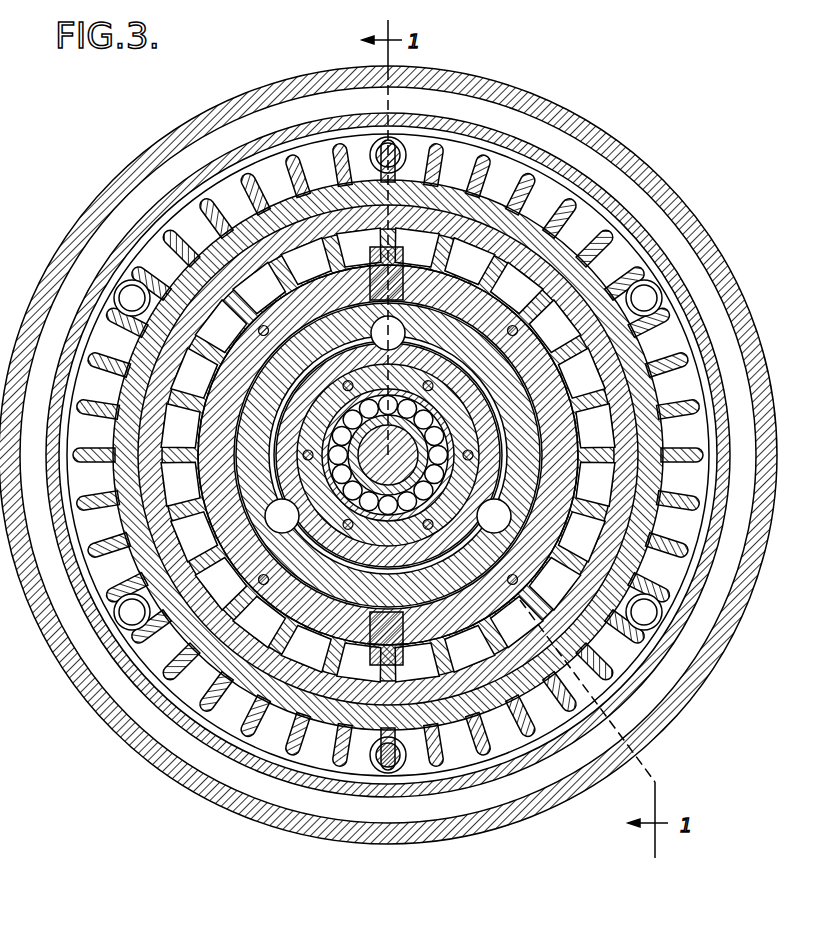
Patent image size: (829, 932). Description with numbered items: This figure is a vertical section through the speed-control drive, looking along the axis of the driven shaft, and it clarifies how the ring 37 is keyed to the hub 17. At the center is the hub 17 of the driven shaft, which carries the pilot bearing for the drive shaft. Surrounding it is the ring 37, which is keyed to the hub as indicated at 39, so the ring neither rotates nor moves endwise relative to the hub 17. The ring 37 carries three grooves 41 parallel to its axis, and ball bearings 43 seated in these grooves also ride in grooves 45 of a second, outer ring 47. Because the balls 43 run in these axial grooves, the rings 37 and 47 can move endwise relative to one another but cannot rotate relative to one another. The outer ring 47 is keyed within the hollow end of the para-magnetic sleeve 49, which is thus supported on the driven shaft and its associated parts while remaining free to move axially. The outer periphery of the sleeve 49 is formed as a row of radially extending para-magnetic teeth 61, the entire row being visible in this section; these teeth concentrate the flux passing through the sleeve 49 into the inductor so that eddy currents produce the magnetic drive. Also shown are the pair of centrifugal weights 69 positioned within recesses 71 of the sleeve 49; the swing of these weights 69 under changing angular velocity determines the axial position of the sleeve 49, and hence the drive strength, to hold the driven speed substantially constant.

The hub 17 is at (480, 480).
The ring 37 is at (295, 405).
The keying 39 is at (395, 368).
The grooves 41 is at (300, 292).
The ball bearings 43 is at (470, 288).
The grooves 45 is at (345, 275).
The outer ring 47 is at (540, 397).
The para-magnetic sleeve 49 is at (218, 462).
The teeth 61 is at (212, 246).
The weights 69 is at (405, 268).
The recesses 71 is at (405, 238).